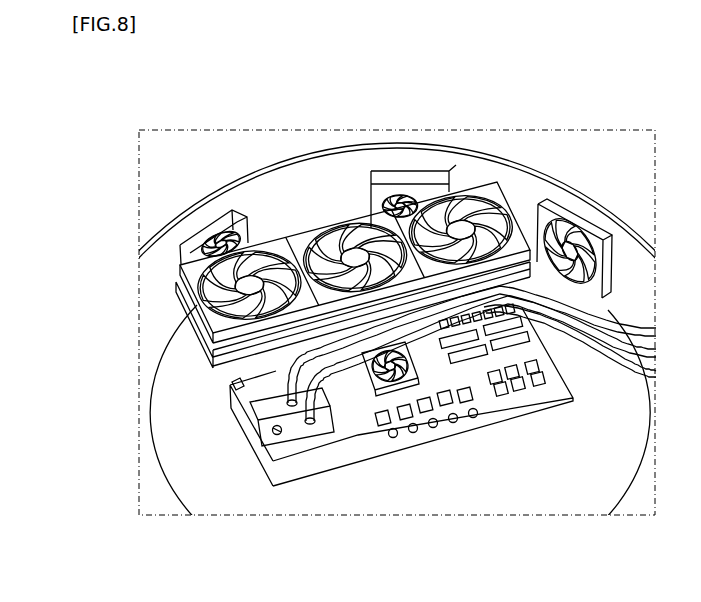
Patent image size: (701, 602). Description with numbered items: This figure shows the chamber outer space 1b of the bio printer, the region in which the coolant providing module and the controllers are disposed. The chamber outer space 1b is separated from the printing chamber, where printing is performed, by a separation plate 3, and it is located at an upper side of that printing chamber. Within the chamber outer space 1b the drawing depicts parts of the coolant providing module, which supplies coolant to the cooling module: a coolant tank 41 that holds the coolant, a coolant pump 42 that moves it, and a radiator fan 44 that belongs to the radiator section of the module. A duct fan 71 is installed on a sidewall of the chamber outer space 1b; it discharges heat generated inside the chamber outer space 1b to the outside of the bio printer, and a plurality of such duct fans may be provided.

The chamber outer space 1b is at (157, 316).
The separation plate 3 is at (197, 447).
The coolant tank 41 is at (331, 440).
The coolant pump 42 is at (258, 383).
The radiator fan 44 is at (458, 188).
The duct fan 71 is at (216, 236).